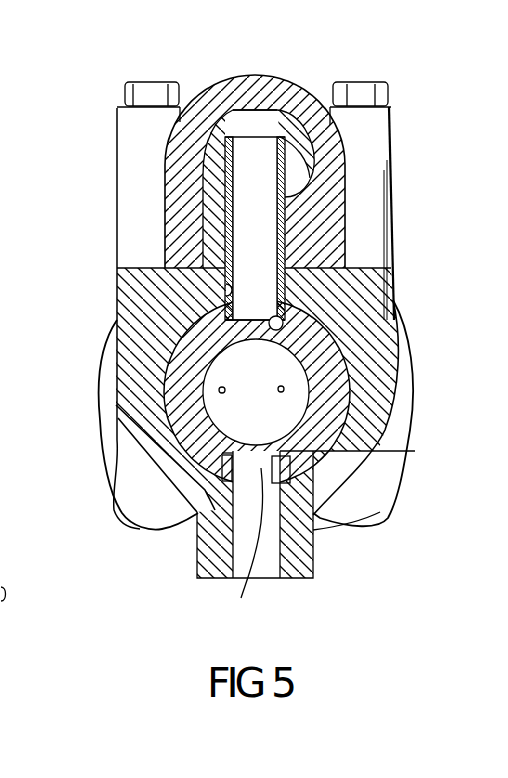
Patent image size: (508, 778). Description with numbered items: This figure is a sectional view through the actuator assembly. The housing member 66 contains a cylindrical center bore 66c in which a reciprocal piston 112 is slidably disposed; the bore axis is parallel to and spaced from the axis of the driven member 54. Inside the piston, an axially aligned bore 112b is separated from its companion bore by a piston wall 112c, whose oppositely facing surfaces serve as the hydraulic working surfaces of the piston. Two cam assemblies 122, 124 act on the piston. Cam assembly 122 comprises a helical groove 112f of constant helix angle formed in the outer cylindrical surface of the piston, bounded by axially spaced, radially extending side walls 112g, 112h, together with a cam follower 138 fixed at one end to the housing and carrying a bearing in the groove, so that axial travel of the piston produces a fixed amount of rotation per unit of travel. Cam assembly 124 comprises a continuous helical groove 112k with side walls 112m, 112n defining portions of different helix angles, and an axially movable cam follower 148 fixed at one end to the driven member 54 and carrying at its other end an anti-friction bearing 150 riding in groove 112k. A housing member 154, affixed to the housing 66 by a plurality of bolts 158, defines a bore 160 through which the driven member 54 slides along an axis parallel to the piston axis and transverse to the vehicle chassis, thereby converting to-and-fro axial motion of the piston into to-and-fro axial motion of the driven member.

The driven member 54 is at (307, 160).
The housing member 66 is at (424, 343).
The cylindrical center bore 66c is at (150, 426).
The reciprocal piston 112 is at (190, 396).
The axially aligned bore 112b is at (225, 303).
The piston wall 112c is at (272, 381).
The helical groove 112f is at (242, 539).
The side wall 112g is at (195, 520).
The side wall 112h is at (371, 452).
The continuous helical groove 112k is at (252, 312).
The side wall 112m is at (224, 288).
The side wall 112n is at (290, 330).
The cam assembly 122 is at (378, 523).
The cam assembly 124 is at (332, 295).
The cam follower 138 is at (313, 575).
The cam follower 148 is at (271, 237).
The anti-friction bearing 150 is at (220, 226).
The housing member 154 is at (310, 93).
The bolts 158 is at (127, 82).
The bore 160 is at (208, 141).